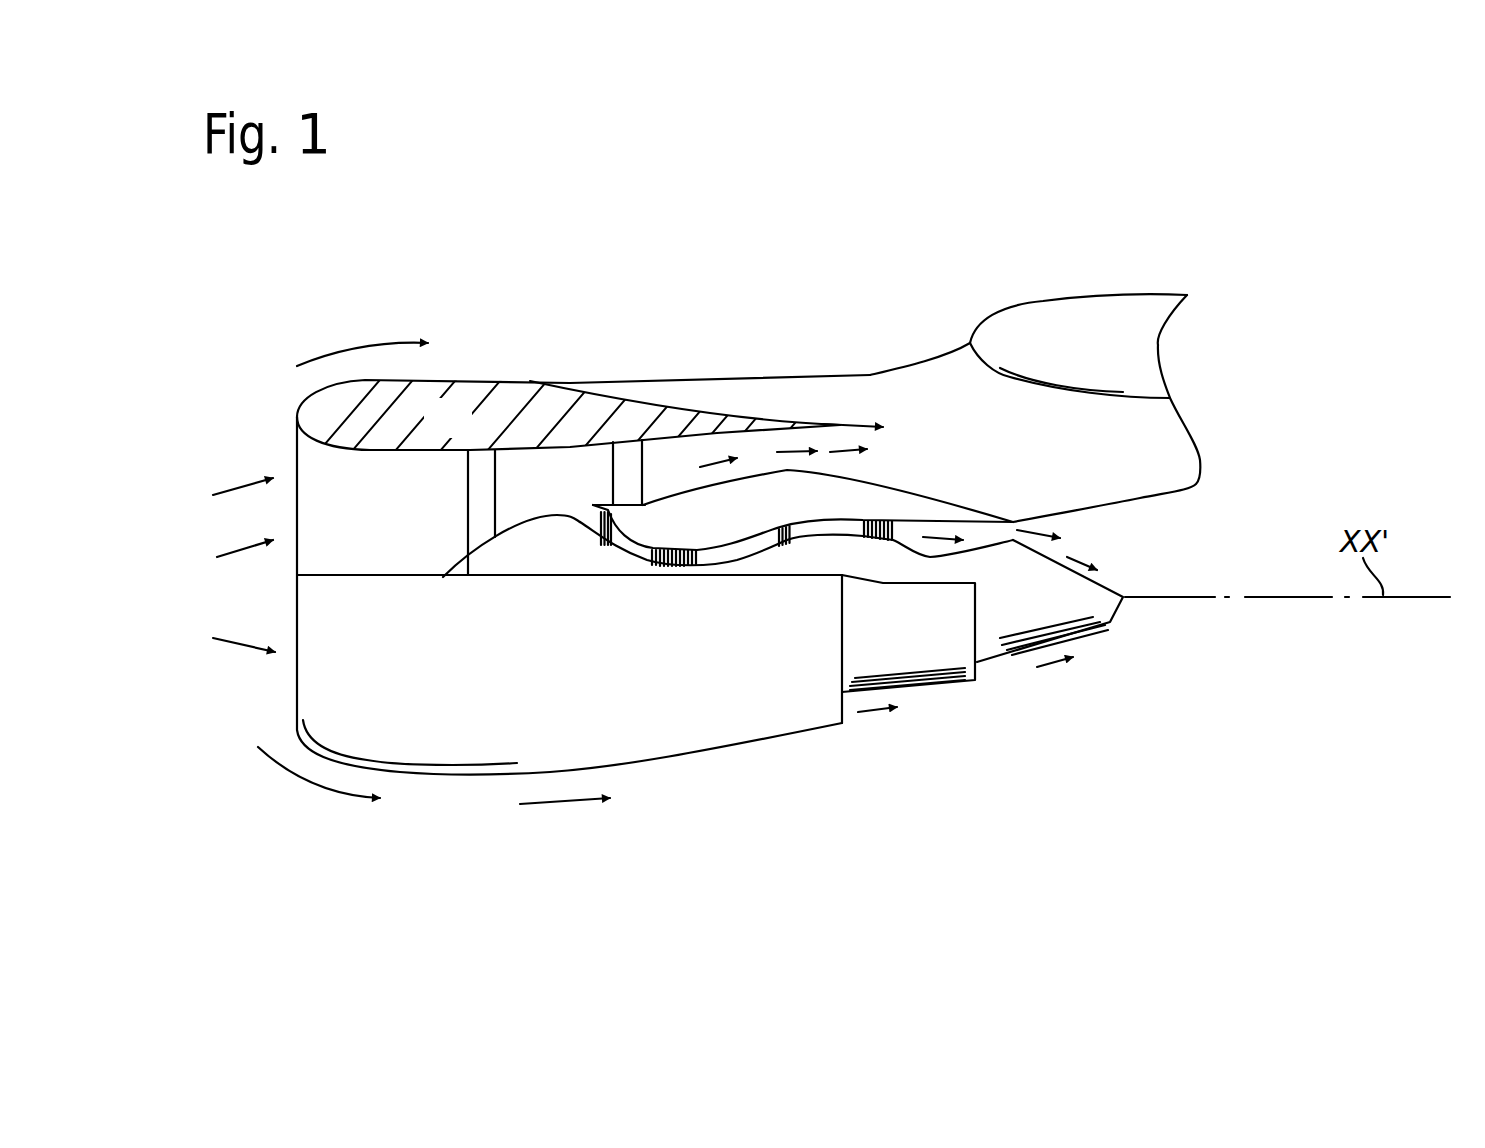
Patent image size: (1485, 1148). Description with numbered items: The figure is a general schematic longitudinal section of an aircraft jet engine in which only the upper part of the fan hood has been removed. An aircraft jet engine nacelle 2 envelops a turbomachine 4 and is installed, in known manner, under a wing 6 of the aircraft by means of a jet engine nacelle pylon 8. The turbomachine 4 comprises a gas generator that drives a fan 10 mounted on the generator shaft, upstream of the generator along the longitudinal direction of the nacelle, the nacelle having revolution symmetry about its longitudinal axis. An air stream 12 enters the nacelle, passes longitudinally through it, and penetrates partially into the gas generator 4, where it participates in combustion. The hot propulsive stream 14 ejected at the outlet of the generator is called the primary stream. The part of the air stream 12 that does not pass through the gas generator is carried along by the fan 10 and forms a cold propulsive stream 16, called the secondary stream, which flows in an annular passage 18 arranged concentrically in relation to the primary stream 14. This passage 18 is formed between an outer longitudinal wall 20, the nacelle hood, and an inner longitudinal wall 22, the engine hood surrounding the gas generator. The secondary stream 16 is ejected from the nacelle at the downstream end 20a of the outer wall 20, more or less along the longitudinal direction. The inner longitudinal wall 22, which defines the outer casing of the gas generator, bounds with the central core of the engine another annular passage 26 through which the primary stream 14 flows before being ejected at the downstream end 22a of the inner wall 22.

The aircraft jet engine nacelle 2 is at (457, 354).
The turbomachine 4 is at (698, 487).
The wing 6 is at (1137, 294).
The jet engine nacelle pylon 8 is at (777, 393).
The fan 10 is at (477, 498).
The air stream 12 is at (243, 485).
The hot propulsive stream 14 is at (940, 537).
The cold propulsive stream 16 is at (840, 450).
The annular passage 18 is at (667, 460).
The outer longitudinal wall 20 is at (468, 437).
The downstream end of outer wall 20a is at (845, 416).
The inner longitudinal wall 22 is at (736, 535).
The downstream end of inner wall 22a is at (962, 683).
The annular passage 26 is at (903, 520).